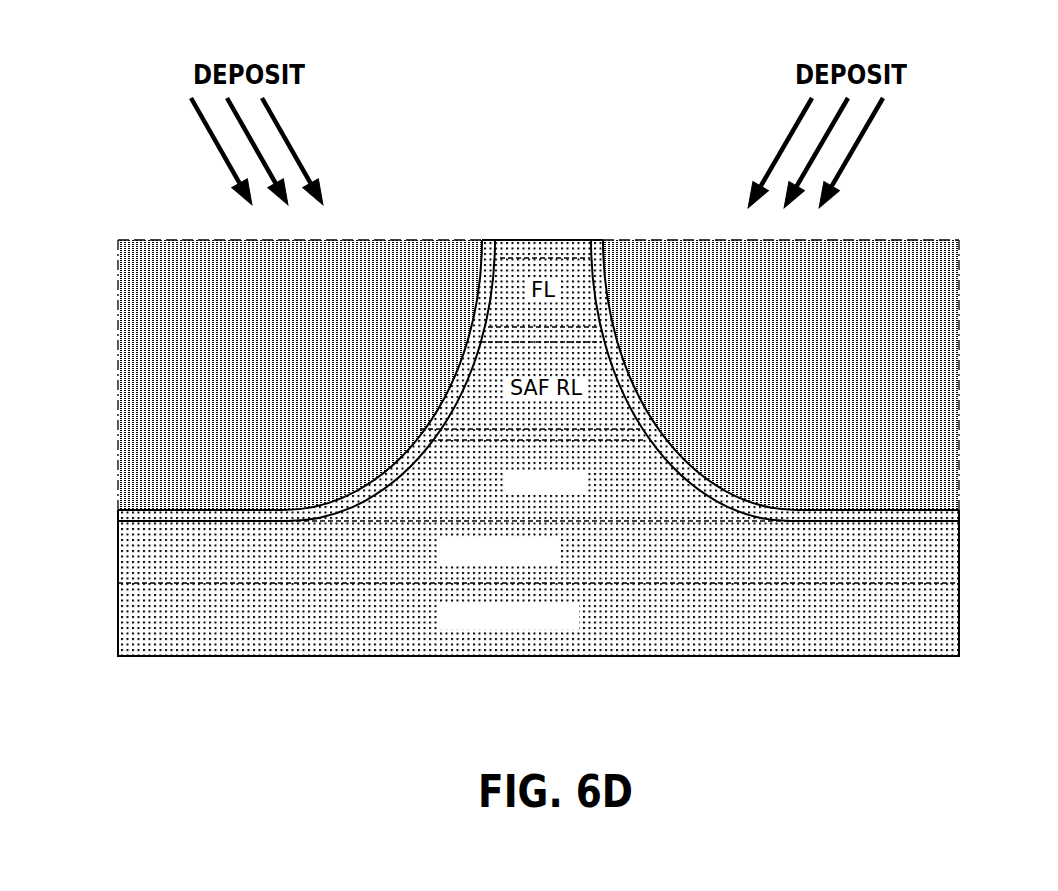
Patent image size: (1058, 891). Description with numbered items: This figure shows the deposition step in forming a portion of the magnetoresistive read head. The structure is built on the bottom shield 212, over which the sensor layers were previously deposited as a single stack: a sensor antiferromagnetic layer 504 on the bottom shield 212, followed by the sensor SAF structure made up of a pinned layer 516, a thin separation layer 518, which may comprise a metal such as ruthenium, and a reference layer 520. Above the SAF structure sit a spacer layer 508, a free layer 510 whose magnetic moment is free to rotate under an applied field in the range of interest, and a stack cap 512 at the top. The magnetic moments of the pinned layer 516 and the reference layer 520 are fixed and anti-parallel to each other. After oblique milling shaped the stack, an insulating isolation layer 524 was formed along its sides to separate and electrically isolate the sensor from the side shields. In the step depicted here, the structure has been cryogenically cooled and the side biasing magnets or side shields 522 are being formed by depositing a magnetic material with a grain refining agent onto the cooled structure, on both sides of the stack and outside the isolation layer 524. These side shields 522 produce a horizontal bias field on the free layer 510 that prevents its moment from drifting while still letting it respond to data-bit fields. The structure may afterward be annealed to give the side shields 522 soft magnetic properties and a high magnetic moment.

The side biasing magnets or side shields 522 is at (386, 255).
The stack cap 512 is at (505, 238).
The free layer 510 is at (497, 293).
The spacer layer 508 is at (487, 337).
The reference layer 520 is at (477, 373).
The thin separation layer 518 is at (440, 433).
The pinned layer 516 is at (425, 478).
The isolation layer 524 is at (347, 490).
The sensor antiferromagnetic layer 504 is at (634, 563).
The bottom shield 212 is at (630, 628).